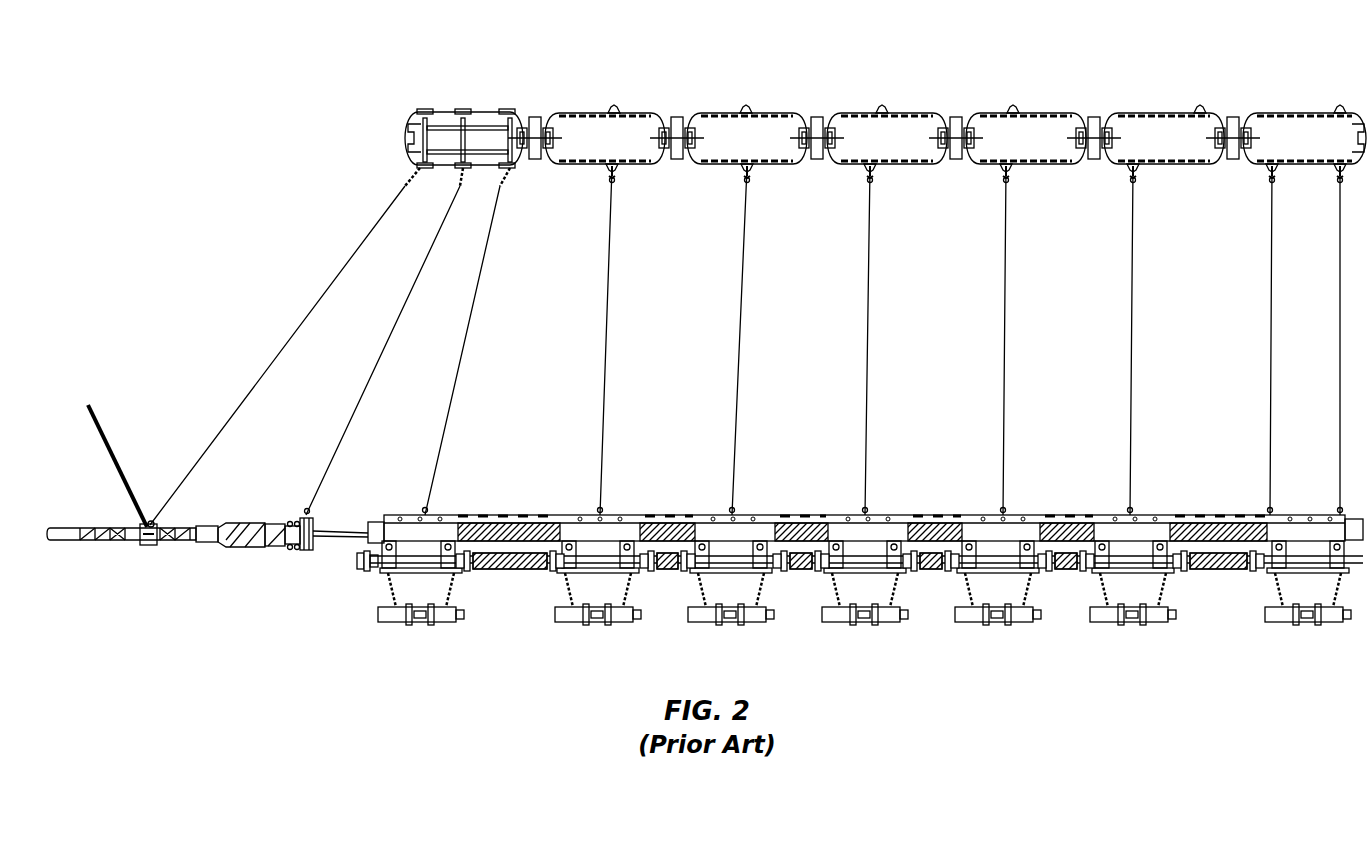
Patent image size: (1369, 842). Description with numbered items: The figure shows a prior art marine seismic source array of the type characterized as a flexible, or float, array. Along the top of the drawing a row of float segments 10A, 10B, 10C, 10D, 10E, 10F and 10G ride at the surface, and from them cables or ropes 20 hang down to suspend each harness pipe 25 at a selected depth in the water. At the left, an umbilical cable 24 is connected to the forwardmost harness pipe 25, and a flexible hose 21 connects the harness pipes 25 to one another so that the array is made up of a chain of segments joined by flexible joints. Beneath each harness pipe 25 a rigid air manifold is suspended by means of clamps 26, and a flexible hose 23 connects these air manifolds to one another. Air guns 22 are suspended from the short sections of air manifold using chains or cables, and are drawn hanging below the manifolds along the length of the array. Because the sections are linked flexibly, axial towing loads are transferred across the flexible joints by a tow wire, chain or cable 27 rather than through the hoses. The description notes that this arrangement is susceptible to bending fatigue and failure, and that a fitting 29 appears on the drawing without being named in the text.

The float segment 10A is at (483, 111).
The float segment 10B is at (626, 113).
The float segment 10C is at (755, 113).
The float segment 10D is at (887, 113).
The float segment 10E is at (1017, 113).
The float segment 10F is at (1153, 113).
The float segment 10G is at (1289, 113).
The cables or ropes 20 is at (478, 316).
The flexible hose 21 is at (522, 524).
The air guns 22 is at (376, 613).
The flexible hose 23 is at (510, 570).
The umbilical cable 24 is at (65, 530).
The harness pipe 25 is at (440, 522).
The clamps 26 is at (571, 548).
The tow wire, chain or cable 27 is at (783, 524).
The end fitting 29 is at (356, 561).